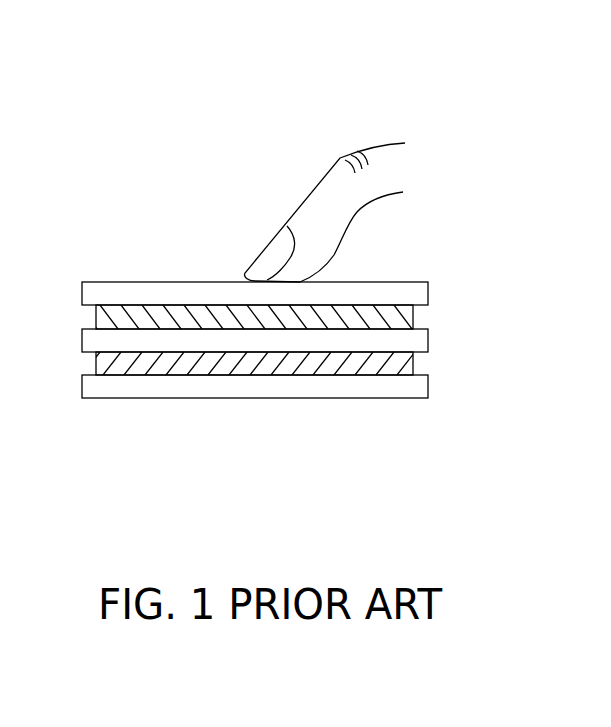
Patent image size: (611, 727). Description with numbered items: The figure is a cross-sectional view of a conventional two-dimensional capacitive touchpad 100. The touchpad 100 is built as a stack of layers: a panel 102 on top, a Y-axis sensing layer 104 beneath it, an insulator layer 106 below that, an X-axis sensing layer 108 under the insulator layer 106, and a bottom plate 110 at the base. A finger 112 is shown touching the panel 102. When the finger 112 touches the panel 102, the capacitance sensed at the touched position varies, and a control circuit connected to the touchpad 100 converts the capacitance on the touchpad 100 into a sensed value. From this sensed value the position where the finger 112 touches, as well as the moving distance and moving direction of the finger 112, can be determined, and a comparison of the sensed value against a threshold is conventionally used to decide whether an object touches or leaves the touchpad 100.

The two-dimensional capacitive touchpad 100 is at (440, 257).
The panel 102 is at (420, 290).
The Y-axis sensing layer 104 is at (414, 317).
The insulator layer 106 is at (420, 337).
The X-axis sensing layer 108 is at (414, 363).
The bottom plate 110 is at (420, 388).
The finger 112 is at (382, 148).